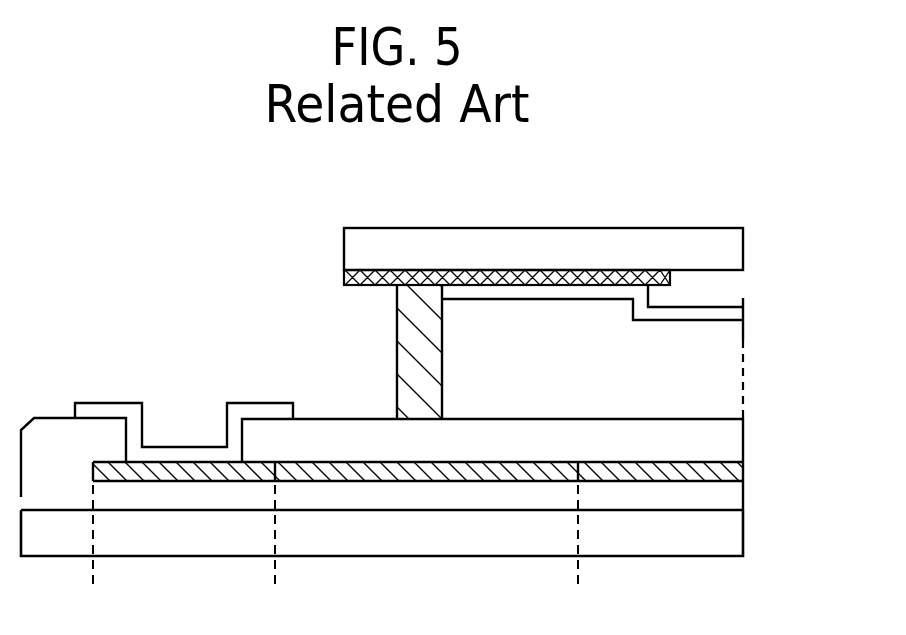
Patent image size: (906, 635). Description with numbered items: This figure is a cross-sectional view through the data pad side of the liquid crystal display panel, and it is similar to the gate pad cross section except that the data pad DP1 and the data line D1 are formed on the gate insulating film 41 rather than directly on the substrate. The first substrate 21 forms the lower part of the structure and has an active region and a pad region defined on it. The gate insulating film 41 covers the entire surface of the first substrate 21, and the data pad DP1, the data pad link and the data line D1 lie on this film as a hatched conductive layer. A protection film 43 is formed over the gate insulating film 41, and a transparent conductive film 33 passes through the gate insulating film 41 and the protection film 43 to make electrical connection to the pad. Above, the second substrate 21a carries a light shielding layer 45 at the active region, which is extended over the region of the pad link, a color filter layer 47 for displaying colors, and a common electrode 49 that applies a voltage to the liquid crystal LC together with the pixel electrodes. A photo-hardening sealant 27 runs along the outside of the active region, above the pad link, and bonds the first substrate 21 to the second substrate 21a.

The second substrate 21a is at (745, 246).
The light shielding layer 45 is at (344, 278).
The photo-hardening sealant 27 is at (397, 348).
The color filter layer 47 is at (752, 291).
The common electrode 49 is at (743, 310).
The liquid crystal LC is at (745, 372).
The protection film 43 is at (745, 432).
The transparent conductive film 33 is at (125, 403).
The data pad DP1 is at (172, 478).
The data line D1 is at (658, 477).
The gate insulating film 41 is at (752, 502).
The first substrate 21 is at (743, 536).